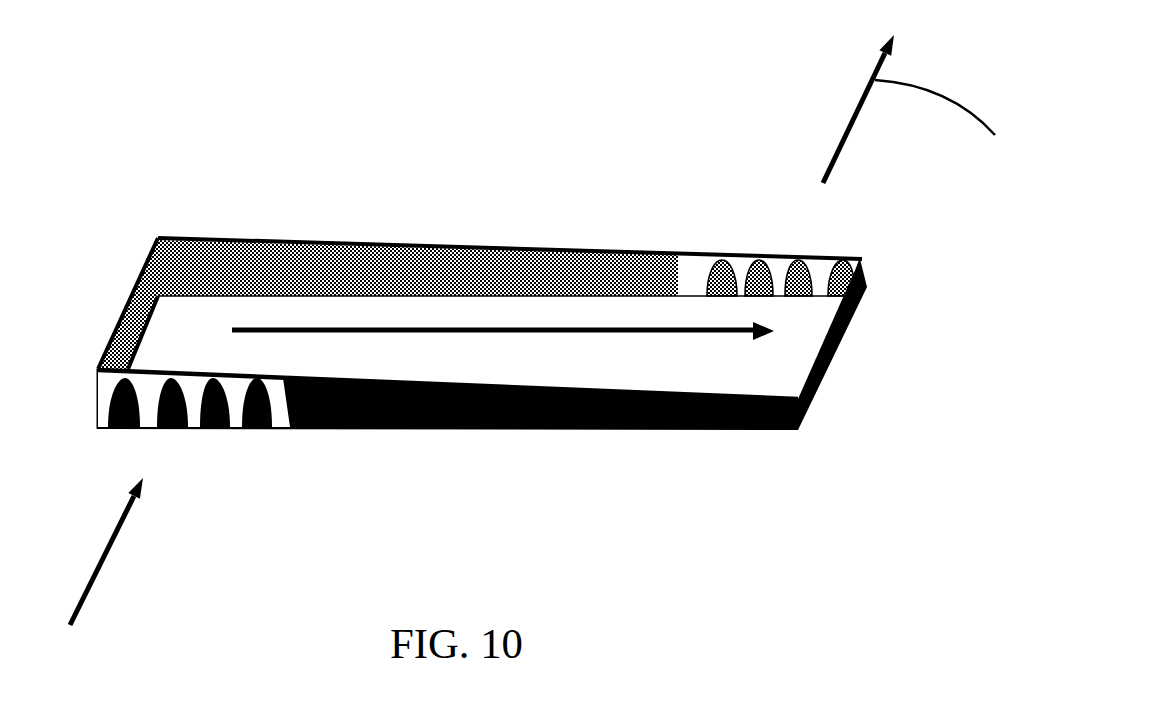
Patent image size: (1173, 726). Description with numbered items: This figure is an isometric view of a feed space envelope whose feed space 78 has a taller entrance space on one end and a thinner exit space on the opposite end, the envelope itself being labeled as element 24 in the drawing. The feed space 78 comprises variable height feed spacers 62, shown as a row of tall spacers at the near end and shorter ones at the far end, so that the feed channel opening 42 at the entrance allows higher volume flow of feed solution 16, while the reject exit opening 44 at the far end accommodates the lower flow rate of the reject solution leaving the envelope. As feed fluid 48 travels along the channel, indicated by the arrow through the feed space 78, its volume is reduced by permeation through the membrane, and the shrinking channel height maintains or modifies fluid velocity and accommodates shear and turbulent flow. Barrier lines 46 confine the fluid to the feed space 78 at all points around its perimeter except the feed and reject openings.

The feed solution 16 is at (132, 510).
The waveguide 24 is at (523, 350).
The feed channel opening 42 is at (214, 457).
The reject exit opening 44 is at (868, 227).
The barrier lines 46 is at (497, 429).
The feed fluid 48 is at (503, 274).
The variable height feed spacers 62 is at (279, 457).
The feed space 78 is at (657, 370).